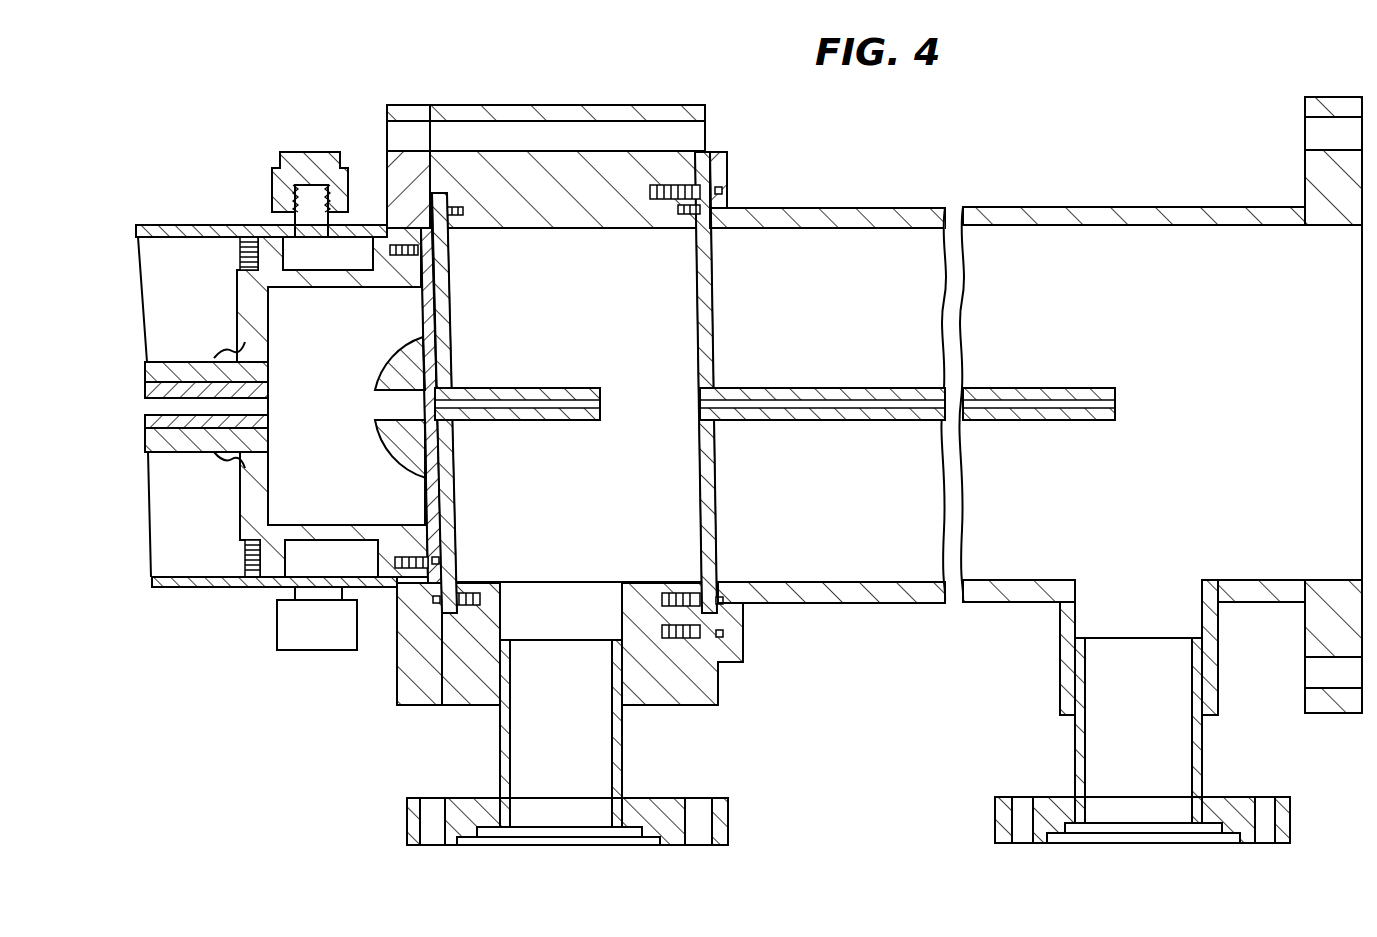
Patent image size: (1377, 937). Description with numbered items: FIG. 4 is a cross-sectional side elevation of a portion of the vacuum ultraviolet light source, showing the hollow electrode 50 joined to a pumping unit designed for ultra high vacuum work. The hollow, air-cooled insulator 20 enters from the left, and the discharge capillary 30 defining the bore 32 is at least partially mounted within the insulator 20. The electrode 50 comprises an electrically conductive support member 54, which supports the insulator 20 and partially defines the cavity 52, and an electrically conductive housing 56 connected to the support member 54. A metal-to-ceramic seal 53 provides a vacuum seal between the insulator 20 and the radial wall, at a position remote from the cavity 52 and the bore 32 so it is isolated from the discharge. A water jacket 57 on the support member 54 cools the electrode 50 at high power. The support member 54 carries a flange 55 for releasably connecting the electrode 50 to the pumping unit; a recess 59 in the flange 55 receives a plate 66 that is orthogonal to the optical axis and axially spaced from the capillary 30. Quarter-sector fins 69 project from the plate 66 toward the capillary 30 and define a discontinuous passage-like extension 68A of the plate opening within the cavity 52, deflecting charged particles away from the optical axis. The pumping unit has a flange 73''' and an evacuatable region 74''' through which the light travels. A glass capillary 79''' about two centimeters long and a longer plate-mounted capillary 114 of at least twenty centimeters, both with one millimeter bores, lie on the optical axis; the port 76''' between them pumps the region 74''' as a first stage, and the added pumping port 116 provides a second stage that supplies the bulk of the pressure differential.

The hollow electrode 50 is at (399, 98).
The flange 55 is at (390, 162).
The electrically conductive housing 56 is at (198, 226).
The electrically conductive support member 54 is at (237, 335).
The metal-to-ceramic seal 53 is at (224, 350).
The water jacket 57 is at (332, 263).
The cavity 52 is at (327, 348).
The radially oriented fins 69 is at (394, 366).
The bore 32 is at (280, 394).
The discontinuous passage-like extension 68A is at (378, 406).
The discharge capillary 30 is at (276, 396).
The plate 66 is at (427, 490).
The recess 59 is at (423, 545).
The hollow, air-cooled insulator 20 is at (187, 455).
The capillary 79''' is at (541, 387).
The flange 73''' is at (828, 376).
The plate-mounted capillary 114 is at (881, 388).
The evacuatable region 74''' is at (1160, 406).
The port 76''' is at (567, 742).
The pumping port 116 is at (1095, 743).